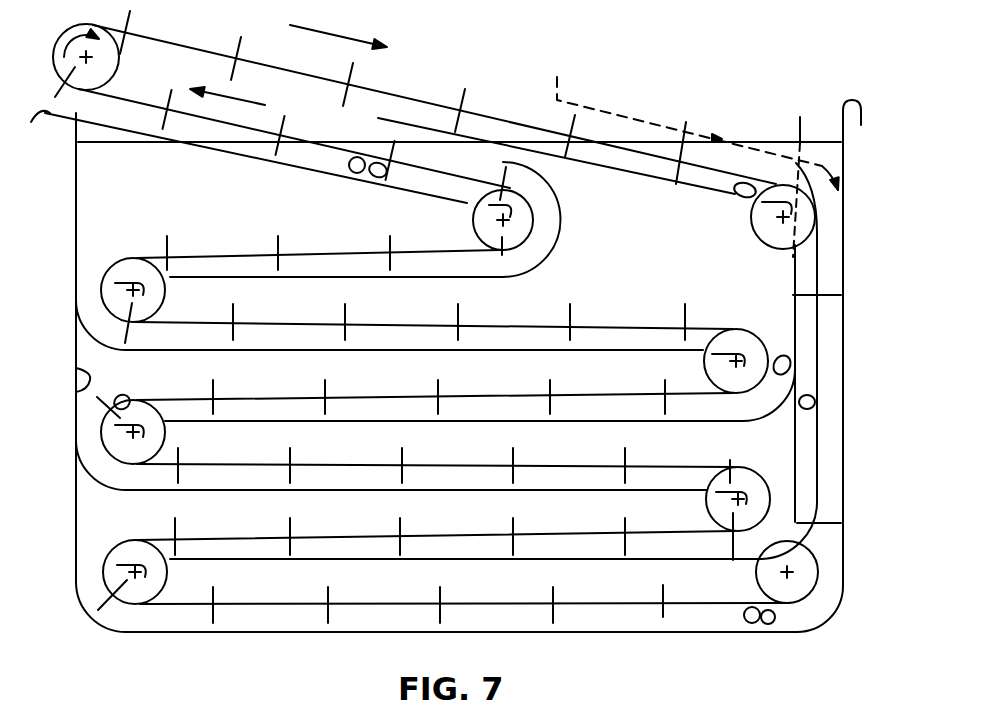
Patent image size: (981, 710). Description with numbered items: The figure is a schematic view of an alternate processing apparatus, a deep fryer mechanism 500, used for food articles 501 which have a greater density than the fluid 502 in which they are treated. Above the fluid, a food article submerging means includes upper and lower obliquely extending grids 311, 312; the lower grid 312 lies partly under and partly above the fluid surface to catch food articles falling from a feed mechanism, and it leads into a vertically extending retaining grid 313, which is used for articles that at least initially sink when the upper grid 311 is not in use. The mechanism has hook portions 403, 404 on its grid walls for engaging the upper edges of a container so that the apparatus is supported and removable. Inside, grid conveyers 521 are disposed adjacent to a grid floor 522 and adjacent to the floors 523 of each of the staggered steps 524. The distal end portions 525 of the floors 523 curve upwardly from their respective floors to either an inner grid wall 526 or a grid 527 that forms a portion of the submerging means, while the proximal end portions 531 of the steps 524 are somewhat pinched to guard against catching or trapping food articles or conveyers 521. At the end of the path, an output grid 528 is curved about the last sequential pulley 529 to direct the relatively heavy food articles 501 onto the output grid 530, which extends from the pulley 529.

The upper grid 311 is at (621, 113).
The lower grid 312 is at (403, 117).
The retaining curved grid 313 is at (840, 189).
The hook portion 403 is at (850, 100).
The hook portion 404 is at (45, 118).
The deep fryer mechanism 500 is at (65, 517).
The food articles 501 is at (737, 197).
The fluid 502 is at (697, 137).
The grid conveyers 521 is at (665, 617).
The grid floor 522 is at (483, 633).
The floors 523 is at (457, 466).
The staggered steps 524 is at (346, 566).
The distal end portions 525 is at (93, 348).
The inner grid wall 526 is at (84, 386).
The grid 527 is at (798, 462).
The output grid 528 is at (563, 248).
The last sequential pulley 529 is at (535, 226).
The output grid 530 is at (240, 158).
The proximal end portions 531 is at (146, 583).